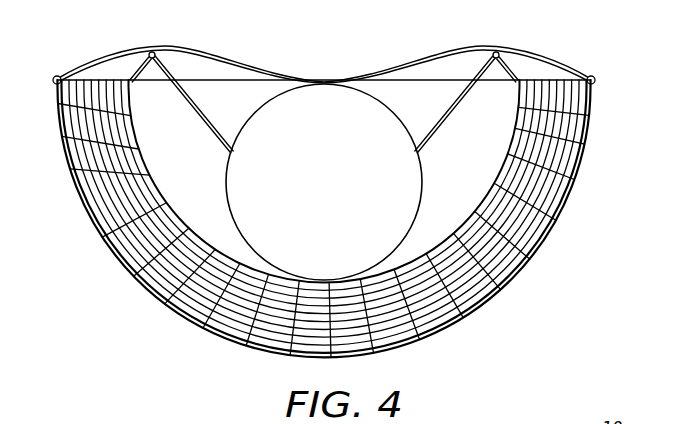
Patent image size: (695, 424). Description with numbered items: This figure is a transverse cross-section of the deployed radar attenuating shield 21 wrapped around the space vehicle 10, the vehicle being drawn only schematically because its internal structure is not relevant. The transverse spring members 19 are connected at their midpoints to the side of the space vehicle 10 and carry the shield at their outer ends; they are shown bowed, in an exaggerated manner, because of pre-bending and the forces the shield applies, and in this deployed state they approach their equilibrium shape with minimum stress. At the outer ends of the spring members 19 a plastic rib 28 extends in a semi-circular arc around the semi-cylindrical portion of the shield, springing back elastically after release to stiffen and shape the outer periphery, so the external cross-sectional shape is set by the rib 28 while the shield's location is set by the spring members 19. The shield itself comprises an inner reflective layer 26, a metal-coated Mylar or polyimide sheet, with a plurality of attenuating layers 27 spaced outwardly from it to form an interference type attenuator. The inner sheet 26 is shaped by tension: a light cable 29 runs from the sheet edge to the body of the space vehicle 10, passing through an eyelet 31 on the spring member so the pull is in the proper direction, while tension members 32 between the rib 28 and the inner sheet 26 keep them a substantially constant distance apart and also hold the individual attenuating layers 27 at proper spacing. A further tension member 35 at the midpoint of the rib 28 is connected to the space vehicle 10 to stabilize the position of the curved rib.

The space vehicle 10 is at (279, 92).
The transverse spring members 19 is at (532, 57).
The radar attenuating shield 21 is at (340, 227).
The inner reflective layer 26 is at (548, 173).
The attenuating layers 27 is at (578, 128).
The rib 28 is at (485, 306).
The light cable 29 is at (168, 68).
The eyelet 31 is at (150, 57).
The tension members 32 is at (500, 272).
The tension member 35 is at (330, 337).